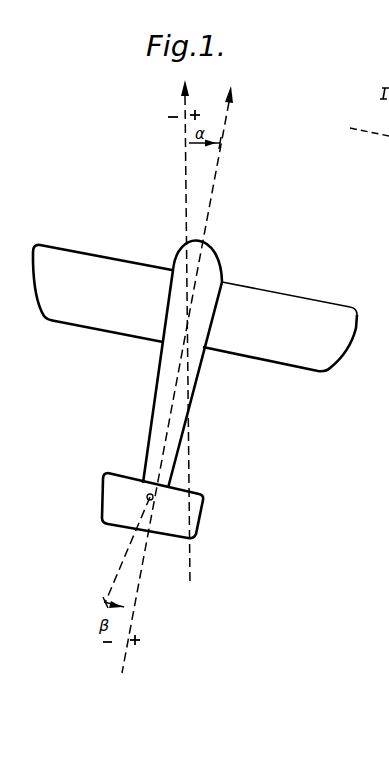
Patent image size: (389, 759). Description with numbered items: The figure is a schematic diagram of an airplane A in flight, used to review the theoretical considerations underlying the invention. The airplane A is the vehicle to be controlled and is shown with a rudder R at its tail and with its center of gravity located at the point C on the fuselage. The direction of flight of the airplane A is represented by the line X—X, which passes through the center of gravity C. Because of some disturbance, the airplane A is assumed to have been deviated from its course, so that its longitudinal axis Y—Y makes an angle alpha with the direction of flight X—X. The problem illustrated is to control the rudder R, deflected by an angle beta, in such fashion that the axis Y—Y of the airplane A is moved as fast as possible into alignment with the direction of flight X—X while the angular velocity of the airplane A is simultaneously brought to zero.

The airplane A is at (317, 306).
The center of gravity C is at (182, 364).
The rudder R is at (152, 505).
The direction of flight line X is at (194, 332).
The longitudinal axis Y is at (180, 390).